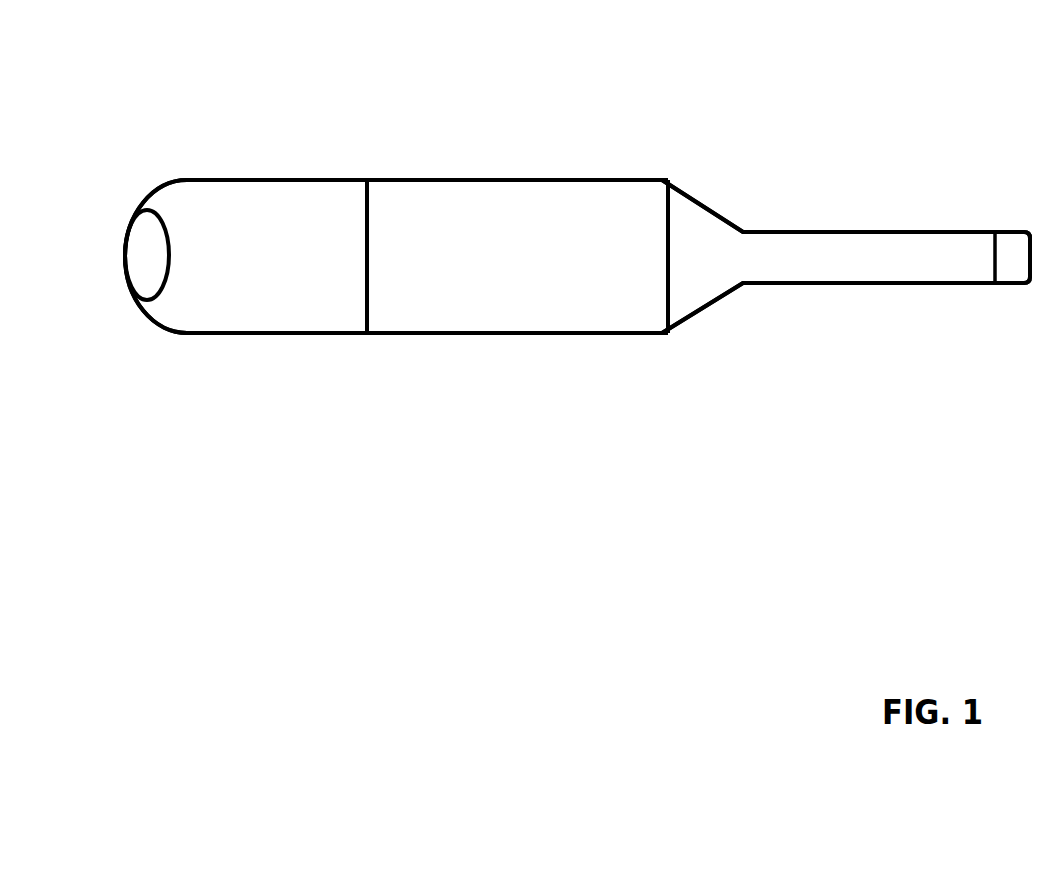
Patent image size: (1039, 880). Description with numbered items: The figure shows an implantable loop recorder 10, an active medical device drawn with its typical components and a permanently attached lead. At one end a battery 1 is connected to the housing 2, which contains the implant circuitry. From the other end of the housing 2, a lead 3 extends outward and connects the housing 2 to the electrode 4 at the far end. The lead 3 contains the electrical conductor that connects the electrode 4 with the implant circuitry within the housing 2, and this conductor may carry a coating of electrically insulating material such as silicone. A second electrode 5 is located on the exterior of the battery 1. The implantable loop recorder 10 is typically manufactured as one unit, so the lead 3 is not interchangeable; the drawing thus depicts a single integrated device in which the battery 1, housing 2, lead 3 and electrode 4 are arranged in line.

The implantable loop recorder 10 is at (431, 137).
The battery 1 is at (301, 345).
The housing 2 is at (484, 351).
The lead 3 is at (756, 298).
The electrode 4 is at (1021, 298).
The second electrode 5 is at (132, 306).